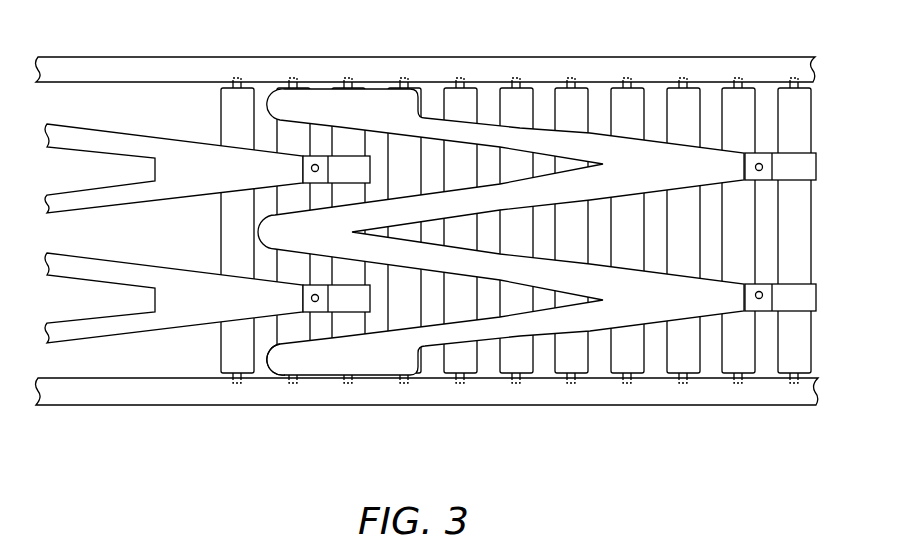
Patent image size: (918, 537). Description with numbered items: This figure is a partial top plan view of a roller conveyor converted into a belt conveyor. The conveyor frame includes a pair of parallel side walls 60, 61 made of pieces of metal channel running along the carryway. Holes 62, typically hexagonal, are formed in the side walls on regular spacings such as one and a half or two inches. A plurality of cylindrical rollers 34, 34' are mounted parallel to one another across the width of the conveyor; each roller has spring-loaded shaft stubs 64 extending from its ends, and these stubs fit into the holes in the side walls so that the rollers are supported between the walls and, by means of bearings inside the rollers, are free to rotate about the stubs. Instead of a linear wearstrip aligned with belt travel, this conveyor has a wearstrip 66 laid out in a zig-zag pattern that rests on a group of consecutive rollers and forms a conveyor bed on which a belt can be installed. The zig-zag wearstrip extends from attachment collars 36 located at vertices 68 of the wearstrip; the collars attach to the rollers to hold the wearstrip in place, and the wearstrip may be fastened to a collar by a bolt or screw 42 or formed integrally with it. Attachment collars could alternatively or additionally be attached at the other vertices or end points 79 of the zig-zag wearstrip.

The cylindrical roller 34 is at (525, 194).
The roller 34' is at (817, 230).
The attachment collar 36 is at (790, 165).
The bolt or screw 42 is at (313, 296).
The side wall 60 is at (647, 58).
The side wall 61 is at (691, 404).
The hole 62 is at (793, 384).
The spring-loaded shaft stub 64 is at (739, 87).
The wearstrip 66 is at (533, 324).
The vertex 68 is at (765, 312).
The end point 79 is at (278, 358).